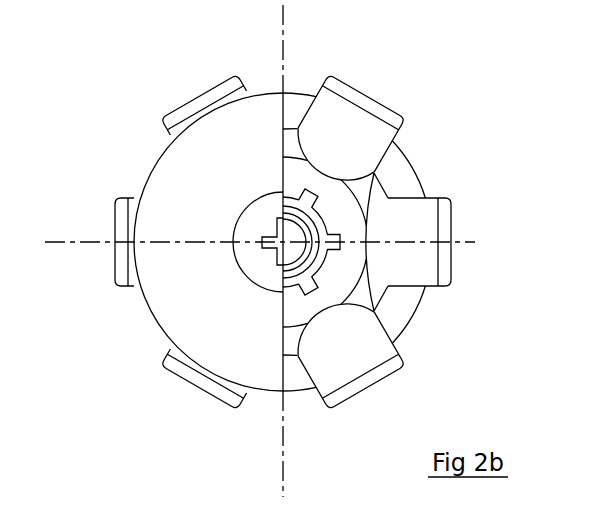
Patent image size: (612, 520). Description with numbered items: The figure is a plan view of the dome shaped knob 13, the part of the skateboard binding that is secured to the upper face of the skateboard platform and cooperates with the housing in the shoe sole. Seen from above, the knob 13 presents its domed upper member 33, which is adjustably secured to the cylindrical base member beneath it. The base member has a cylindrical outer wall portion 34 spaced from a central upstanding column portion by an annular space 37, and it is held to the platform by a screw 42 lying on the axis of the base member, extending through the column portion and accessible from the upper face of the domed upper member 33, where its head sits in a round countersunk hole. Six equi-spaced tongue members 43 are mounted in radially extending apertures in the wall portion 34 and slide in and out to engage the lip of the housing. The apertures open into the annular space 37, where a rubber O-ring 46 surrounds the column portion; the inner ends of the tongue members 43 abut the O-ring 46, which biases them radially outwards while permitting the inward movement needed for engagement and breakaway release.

The knob 13 is at (182, 160).
The domed upper member 33 is at (192, 315).
The cylindrical outer wall portion 34 is at (397, 170).
The annular space 37 is at (288, 143).
The screw 42 is at (262, 267).
The tongue members 43 is at (178, 113).
The rubber O-ring 46 is at (333, 288).